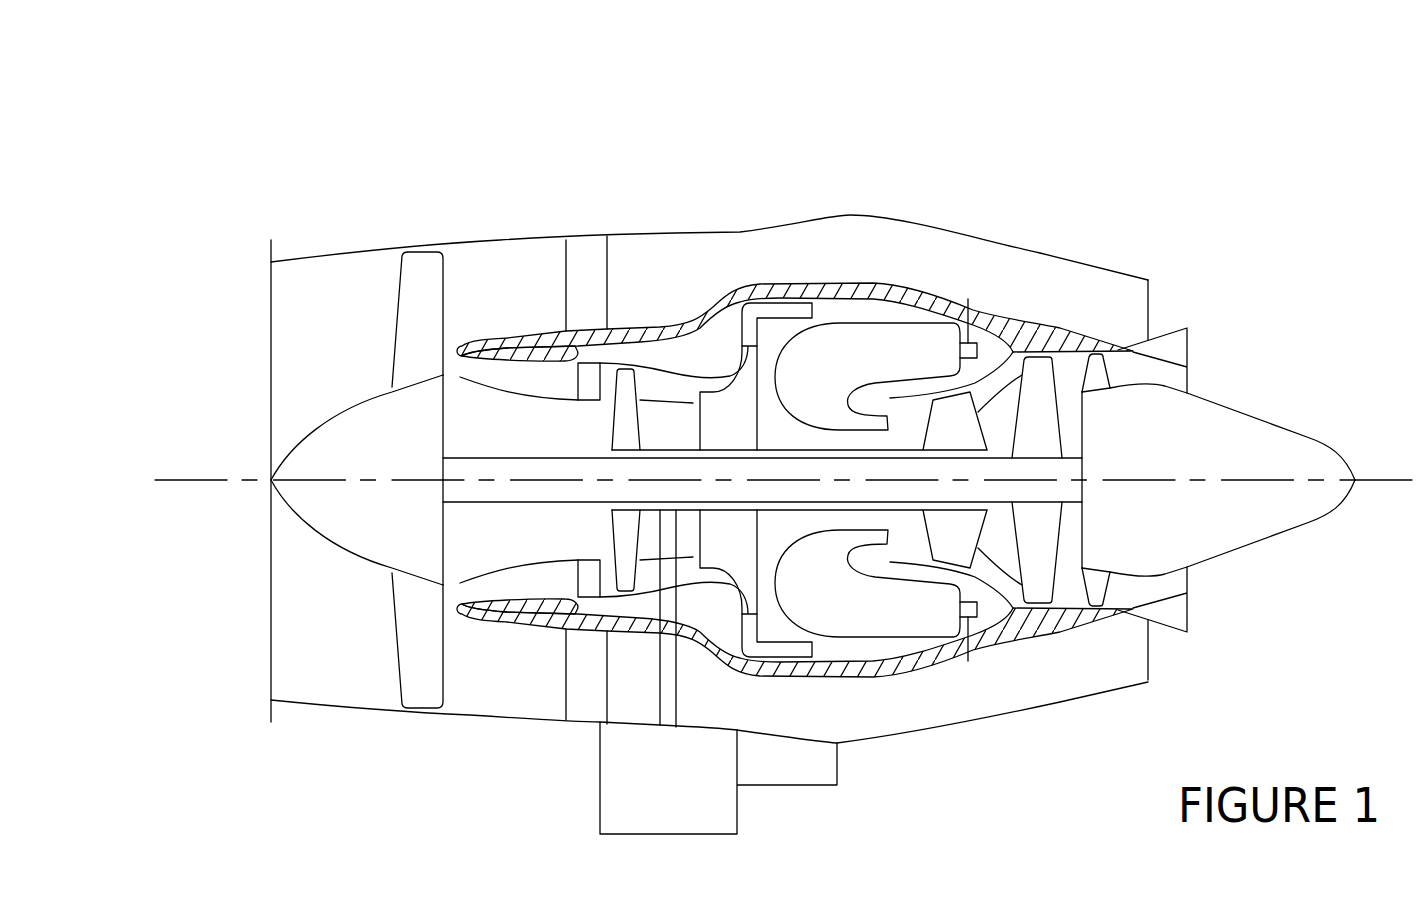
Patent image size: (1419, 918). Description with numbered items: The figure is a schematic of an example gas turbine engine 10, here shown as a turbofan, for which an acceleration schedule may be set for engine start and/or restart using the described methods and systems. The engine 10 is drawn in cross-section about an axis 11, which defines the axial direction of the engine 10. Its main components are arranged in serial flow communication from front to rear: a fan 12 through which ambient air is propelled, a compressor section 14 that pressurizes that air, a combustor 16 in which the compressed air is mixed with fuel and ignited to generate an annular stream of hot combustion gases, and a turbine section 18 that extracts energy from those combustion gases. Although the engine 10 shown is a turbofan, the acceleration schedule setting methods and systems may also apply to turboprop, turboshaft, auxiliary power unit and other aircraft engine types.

The gas turbine engine 10 is at (753, 435).
The axis 11 is at (186, 480).
The fan 12 is at (415, 627).
The compressor section 14 is at (660, 382).
The combustor 16 is at (870, 343).
The turbine section 18 is at (997, 545).